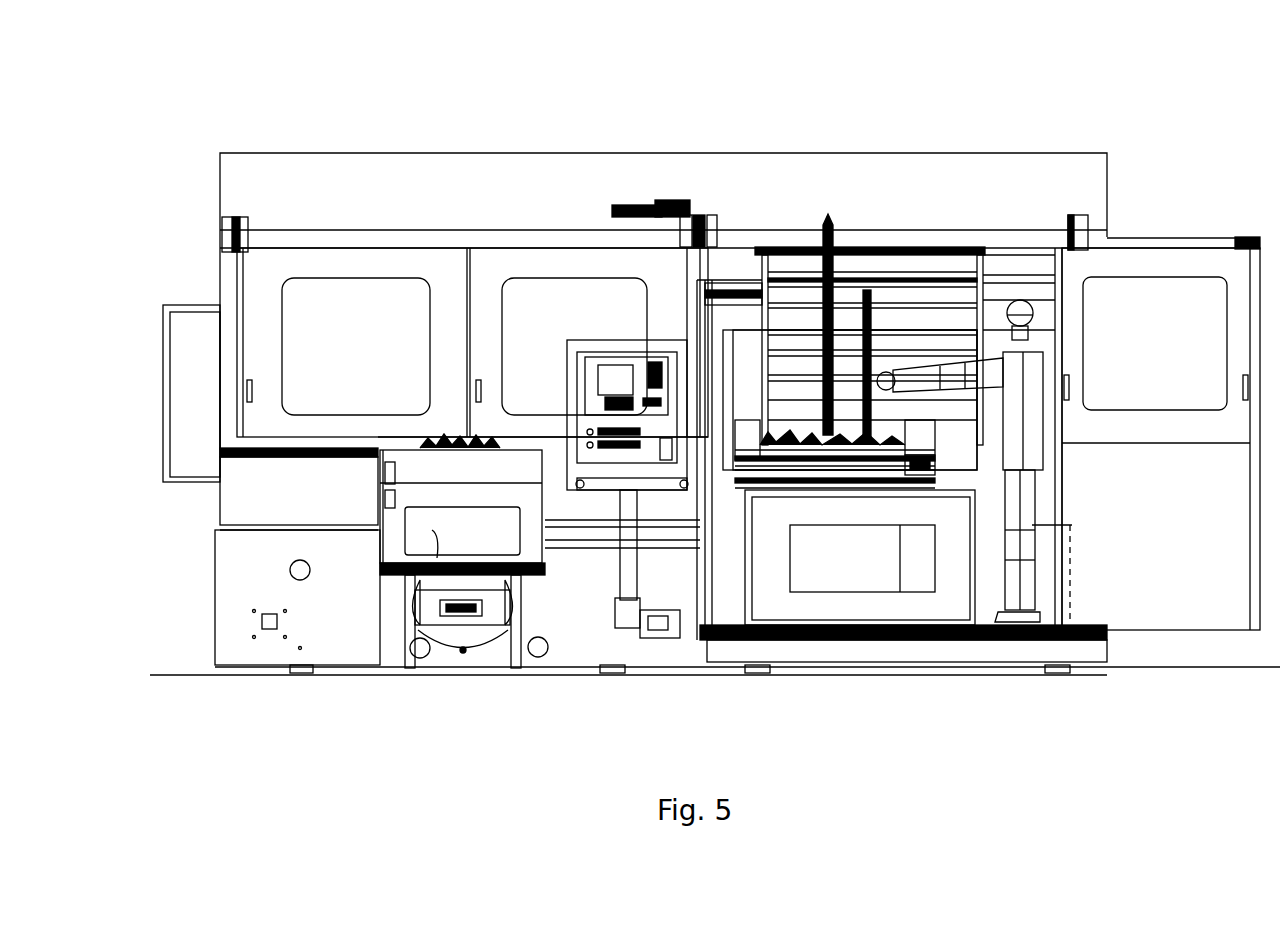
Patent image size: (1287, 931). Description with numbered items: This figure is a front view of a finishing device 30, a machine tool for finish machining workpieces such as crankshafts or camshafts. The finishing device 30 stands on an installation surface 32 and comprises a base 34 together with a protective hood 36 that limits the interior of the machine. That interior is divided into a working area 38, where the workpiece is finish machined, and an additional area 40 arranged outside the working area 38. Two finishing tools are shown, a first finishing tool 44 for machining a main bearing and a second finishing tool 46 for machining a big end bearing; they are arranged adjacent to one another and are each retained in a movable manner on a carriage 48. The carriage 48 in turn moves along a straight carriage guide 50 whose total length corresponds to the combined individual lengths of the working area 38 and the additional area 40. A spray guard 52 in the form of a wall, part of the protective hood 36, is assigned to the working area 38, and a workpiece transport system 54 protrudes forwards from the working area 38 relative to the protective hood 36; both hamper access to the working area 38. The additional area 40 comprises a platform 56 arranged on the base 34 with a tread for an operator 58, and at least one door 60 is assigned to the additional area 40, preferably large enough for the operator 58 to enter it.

The finishing device 30 is at (1125, 122).
The installation surface 32 is at (178, 675).
The base 34 is at (228, 552).
The protective hood 36 is at (393, 183).
The working area 38 is at (529, 325).
The additional area 40 is at (944, 272).
The first finishing tool 44 is at (878, 340).
The second finishing tool 46 is at (806, 218).
The carriage 48 is at (772, 262).
The carriage guide 50 is at (1013, 277).
The spray guard 52 is at (237, 487).
The workpiece transport system 54 is at (398, 627).
The platform 56 is at (867, 655).
The operator 58 is at (1027, 610).
The door 60 is at (1178, 603).